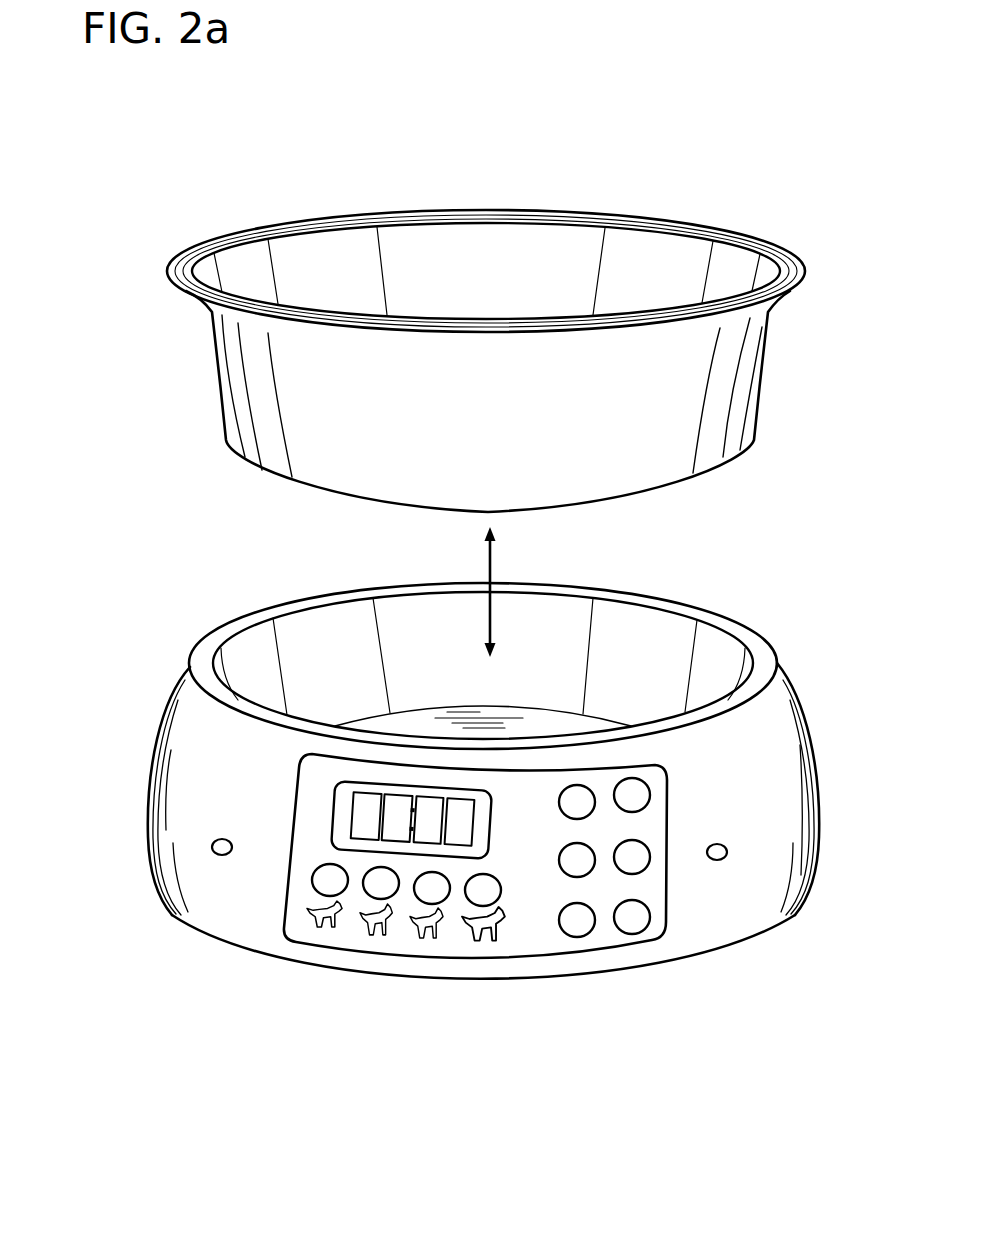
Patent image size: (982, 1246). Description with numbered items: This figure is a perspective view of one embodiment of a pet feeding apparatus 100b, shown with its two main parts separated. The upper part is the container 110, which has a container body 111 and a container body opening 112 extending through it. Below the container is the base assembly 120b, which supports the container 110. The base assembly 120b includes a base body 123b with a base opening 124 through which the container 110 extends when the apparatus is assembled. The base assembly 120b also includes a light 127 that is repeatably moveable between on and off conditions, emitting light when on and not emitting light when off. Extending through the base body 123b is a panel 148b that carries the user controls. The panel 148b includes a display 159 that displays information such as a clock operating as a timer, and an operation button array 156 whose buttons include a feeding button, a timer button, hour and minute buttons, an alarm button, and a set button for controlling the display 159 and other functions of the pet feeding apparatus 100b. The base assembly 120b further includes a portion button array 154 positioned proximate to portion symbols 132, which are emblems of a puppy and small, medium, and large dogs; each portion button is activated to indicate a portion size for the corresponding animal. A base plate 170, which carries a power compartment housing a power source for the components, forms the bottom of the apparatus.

The pet feeding apparatus 100b is at (153, 170).
The container 110 is at (146, 315).
The container body 111 is at (228, 375).
The container body opening 112 is at (491, 236).
The base opening 124 is at (535, 598).
The base assembly 120b is at (110, 716).
The base body 123b is at (165, 813).
The light 127 is at (718, 846).
The base plate 170 is at (411, 1005).
The panel 148b is at (647, 932).
The display 159 is at (314, 823).
The portion button array 154 is at (290, 877).
The operation button array 156 is at (685, 915).
The portion symbols 132 is at (526, 951).